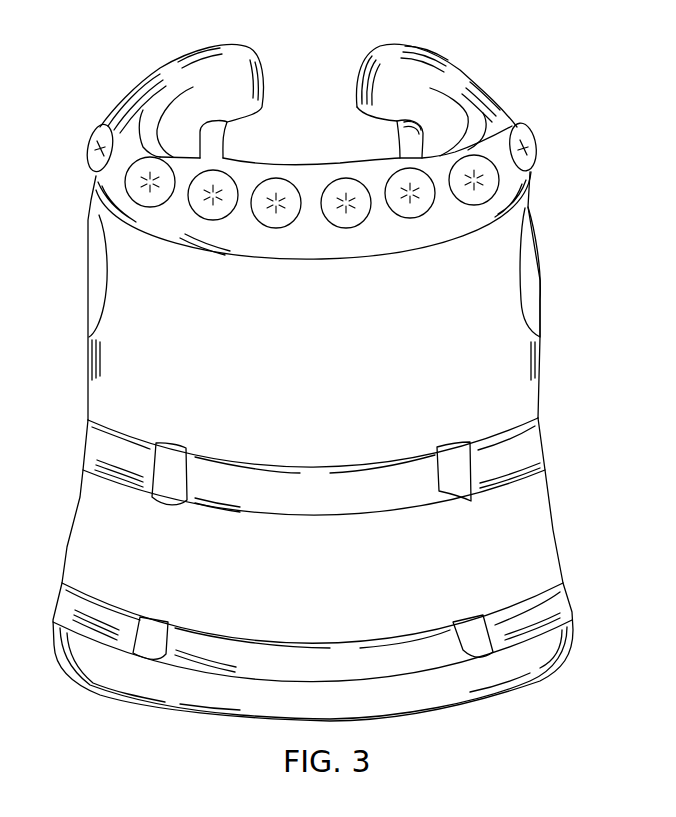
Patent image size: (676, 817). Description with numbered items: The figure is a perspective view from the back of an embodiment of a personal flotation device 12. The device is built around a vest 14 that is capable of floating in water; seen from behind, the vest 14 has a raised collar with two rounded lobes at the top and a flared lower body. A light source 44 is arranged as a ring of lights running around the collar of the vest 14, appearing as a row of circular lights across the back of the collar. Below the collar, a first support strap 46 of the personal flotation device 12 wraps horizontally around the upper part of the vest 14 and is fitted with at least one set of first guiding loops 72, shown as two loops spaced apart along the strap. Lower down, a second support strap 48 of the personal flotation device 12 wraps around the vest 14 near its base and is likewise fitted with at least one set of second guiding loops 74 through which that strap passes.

The personal flotation device 12 is at (486, 37).
The vest 14 is at (88, 372).
The light source 44 is at (537, 142).
The first support strap 46 is at (83, 441).
The second support strap 48 is at (54, 605).
The first guiding loops 72 is at (175, 452).
The second guiding loops 74 is at (157, 631).